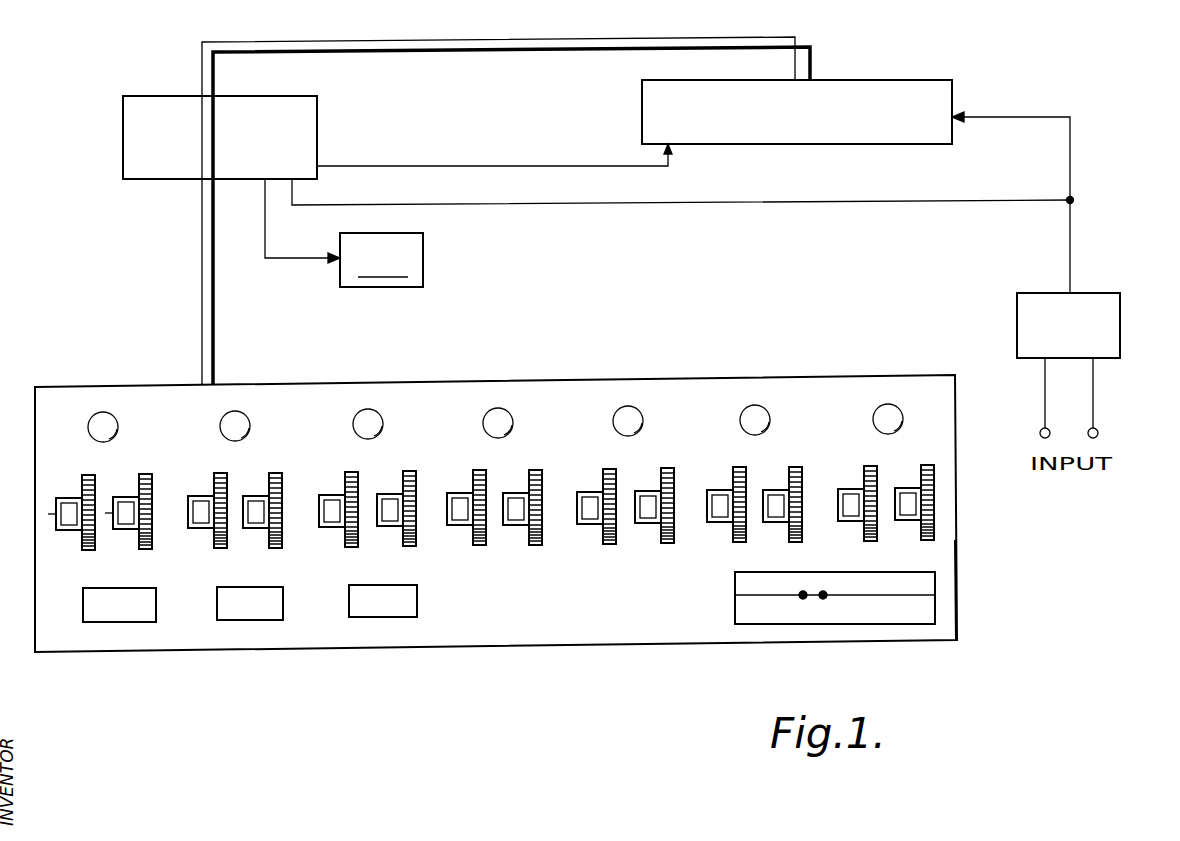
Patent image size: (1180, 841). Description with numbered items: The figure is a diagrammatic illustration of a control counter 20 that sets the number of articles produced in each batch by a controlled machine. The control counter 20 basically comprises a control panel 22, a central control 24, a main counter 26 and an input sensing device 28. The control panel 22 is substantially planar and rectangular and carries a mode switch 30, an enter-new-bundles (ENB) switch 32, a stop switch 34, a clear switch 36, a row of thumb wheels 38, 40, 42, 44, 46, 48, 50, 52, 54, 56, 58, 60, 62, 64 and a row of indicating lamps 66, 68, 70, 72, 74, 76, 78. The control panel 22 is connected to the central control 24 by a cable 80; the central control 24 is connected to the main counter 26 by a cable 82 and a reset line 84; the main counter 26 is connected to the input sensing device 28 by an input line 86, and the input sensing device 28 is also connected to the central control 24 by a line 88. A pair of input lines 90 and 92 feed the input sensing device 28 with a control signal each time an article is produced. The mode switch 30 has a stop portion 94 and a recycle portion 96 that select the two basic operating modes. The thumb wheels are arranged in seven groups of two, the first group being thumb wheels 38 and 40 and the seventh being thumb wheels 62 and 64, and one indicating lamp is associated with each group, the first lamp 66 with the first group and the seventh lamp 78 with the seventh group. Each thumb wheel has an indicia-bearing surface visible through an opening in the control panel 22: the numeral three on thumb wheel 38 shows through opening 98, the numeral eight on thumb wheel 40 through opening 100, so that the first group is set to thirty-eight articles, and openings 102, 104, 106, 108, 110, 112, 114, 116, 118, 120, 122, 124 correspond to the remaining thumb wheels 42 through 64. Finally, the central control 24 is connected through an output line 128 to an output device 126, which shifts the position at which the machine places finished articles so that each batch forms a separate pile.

The control counter 20 is at (497, 662).
The control panel 22 is at (958, 568).
The central control 24 is at (152, 181).
The main counter 26 is at (858, 146).
The input sensing device 28 is at (1121, 341).
The mode switch 30 is at (849, 598).
The enter new bundles (ENB) switch 32 is at (156, 615).
The stop switch 34 is at (283, 612).
The clear switch 36 is at (417, 610).
The thumb wheel 38 is at (78, 527).
The thumb wheel 40 is at (136, 515).
The thumb wheel 42 is at (219, 515).
The thumb wheel 44 is at (274, 514).
The thumb wheel 46 is at (346, 513).
The thumb wheel 48 is at (406, 512).
The thumb wheel 50 is at (472, 512).
The thumb wheel 52 is at (530, 511).
The thumb wheel 54 is at (599, 510).
The thumb wheel 56 is at (661, 509).
The thumb wheel 58 is at (730, 508).
The thumb wheel 60 is at (789, 508).
The thumb wheel 62 is at (857, 507).
The thumb wheel 64 is at (916, 506).
The indicating lamp 66 is at (112, 420).
The indicating lamp 68 is at (244, 419).
The indicating lamp 70 is at (377, 417).
The indicating lamp 72 is at (507, 416).
The indicating lamp 74 is at (637, 414).
The indicating lamp 76 is at (764, 413).
The indicating lamp 78 is at (897, 412).
The cable 80 is at (216, 317).
The cable 82 is at (489, 39).
The reset line 84 is at (468, 165).
The input line 86 is at (1072, 157).
The line 88 is at (789, 207).
The input line 90 is at (1044, 408).
The input line 92 is at (1094, 407).
The stop portion 94 is at (735, 583).
The recycle portion 96 is at (735, 608).
The opening 98 is at (62, 537).
The opening 100 is at (127, 488).
The opening 102 is at (207, 487).
The opening 104 is at (262, 487).
The opening 106 is at (329, 486).
The opening 108 is at (392, 485).
The opening 110 is at (460, 484).
The opening 112 is at (520, 484).
The opening 114 is at (590, 483).
The opening 116 is at (652, 482).
The opening 118 is at (722, 481).
The opening 120 is at (779, 481).
The opening 122 is at (845, 480).
The opening 124 is at (907, 479).
The output device 126 is at (381, 260).
The output line 128 is at (296, 258).